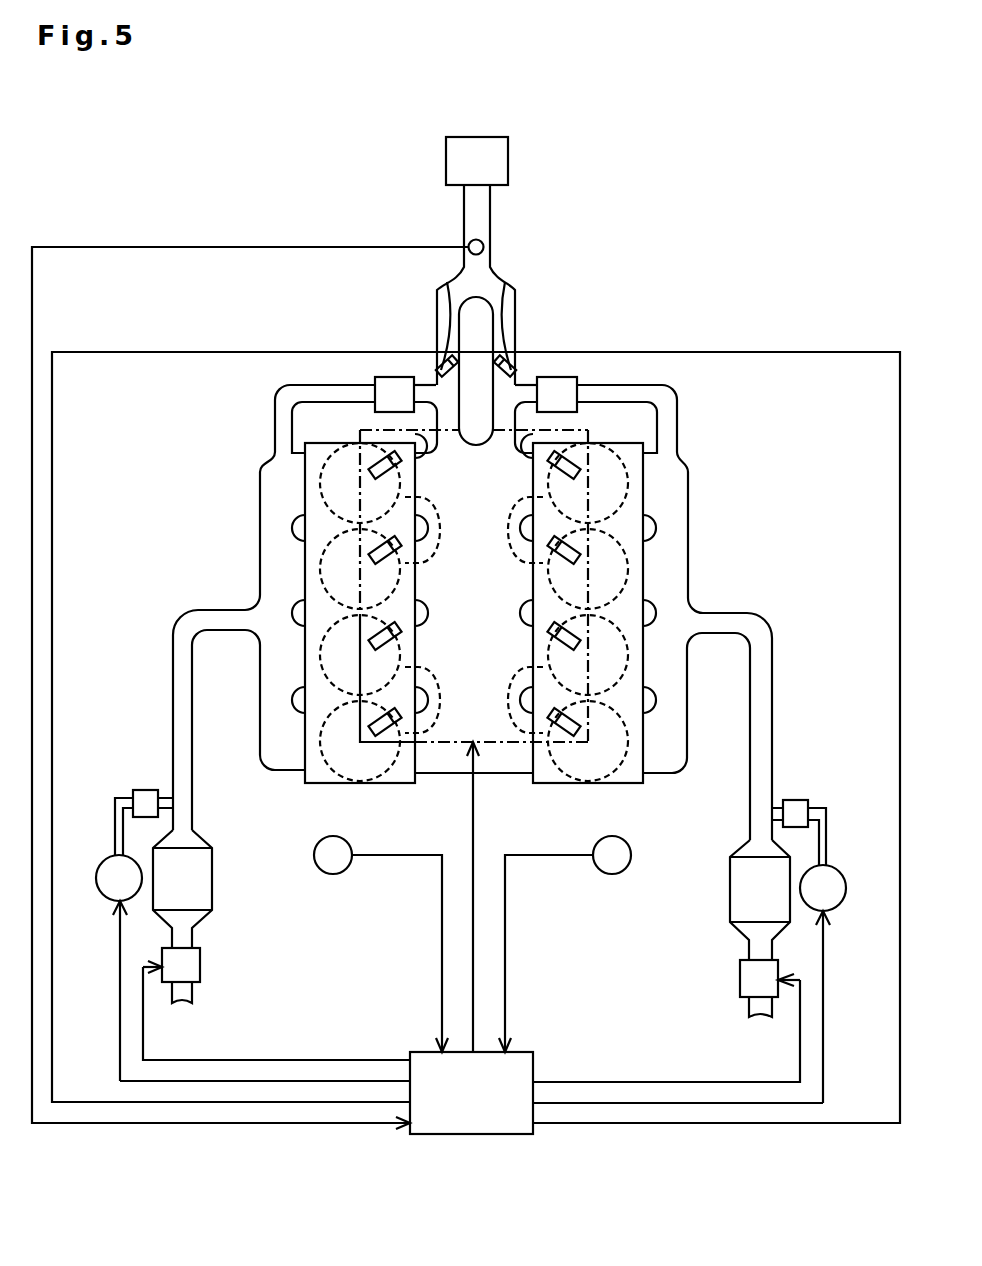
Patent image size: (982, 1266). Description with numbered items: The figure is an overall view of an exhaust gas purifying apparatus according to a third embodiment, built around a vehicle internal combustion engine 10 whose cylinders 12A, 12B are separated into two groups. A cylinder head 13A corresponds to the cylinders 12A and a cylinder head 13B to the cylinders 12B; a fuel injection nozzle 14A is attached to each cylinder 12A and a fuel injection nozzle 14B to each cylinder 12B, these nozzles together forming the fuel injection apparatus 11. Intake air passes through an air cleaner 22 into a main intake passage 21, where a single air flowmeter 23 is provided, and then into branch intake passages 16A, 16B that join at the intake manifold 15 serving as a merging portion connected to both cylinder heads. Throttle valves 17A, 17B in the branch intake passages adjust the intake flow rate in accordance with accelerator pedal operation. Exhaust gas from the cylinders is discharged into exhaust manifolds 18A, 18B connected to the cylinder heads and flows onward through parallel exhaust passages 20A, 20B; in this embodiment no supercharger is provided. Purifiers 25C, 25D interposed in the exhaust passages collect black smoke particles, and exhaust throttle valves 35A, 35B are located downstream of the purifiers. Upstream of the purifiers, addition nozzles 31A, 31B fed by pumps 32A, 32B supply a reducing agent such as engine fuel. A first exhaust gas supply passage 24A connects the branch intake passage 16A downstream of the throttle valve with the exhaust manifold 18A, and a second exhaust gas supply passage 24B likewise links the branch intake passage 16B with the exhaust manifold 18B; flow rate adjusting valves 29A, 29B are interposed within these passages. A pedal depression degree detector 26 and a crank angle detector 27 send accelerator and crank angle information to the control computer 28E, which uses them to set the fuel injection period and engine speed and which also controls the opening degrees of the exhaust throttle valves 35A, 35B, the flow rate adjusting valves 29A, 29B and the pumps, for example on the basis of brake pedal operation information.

The internal combustion engine 10 is at (201, 227).
The fuel injection apparatus 11 is at (438, 745).
The cylinder 12A is at (441, 615).
The cylinder 12B is at (513, 615).
The cylinder head 13A is at (330, 785).
The cylinder head 13B is at (614, 785).
The fuel injection nozzle 14A is at (368, 556).
The fuel injection nozzle 14B is at (581, 556).
The intake manifold 15 is at (502, 770).
The branch intake passage 16A is at (430, 320).
The branch intake passage 16B is at (526, 320).
The throttle valve 17A is at (436, 290).
The throttle valve 17B is at (516, 290).
The exhaust manifold 18A is at (273, 748).
The exhaust manifold 18B is at (677, 723).
The exhaust passage 20A is at (192, 787).
The exhaust passage 20B is at (750, 797).
The main intake passage 21 is at (482, 210).
The air cleaner 22 is at (508, 158).
The air flowmeter 23 is at (469, 241).
The first exhaust gas supply passage 24A is at (362, 393).
The second exhaust gas supply passage 24B is at (585, 393).
The purifier 25C is at (212, 880).
The purifier 25D is at (730, 890).
The pedal depression degree detector 26 is at (338, 870).
The crank angle detector 27 is at (608, 870).
The control computer 28E is at (470, 1134).
The flow rate adjusting valve 29A is at (393, 376).
The flow rate adjusting valve 29B is at (555, 376).
The addition nozzle 31A is at (143, 790).
The addition nozzle 31B is at (800, 800).
The pump 32A is at (104, 870).
The pump 32B is at (838, 888).
The exhaust throttle valve 35A is at (200, 968).
The exhaust throttle valve 35B is at (740, 975).